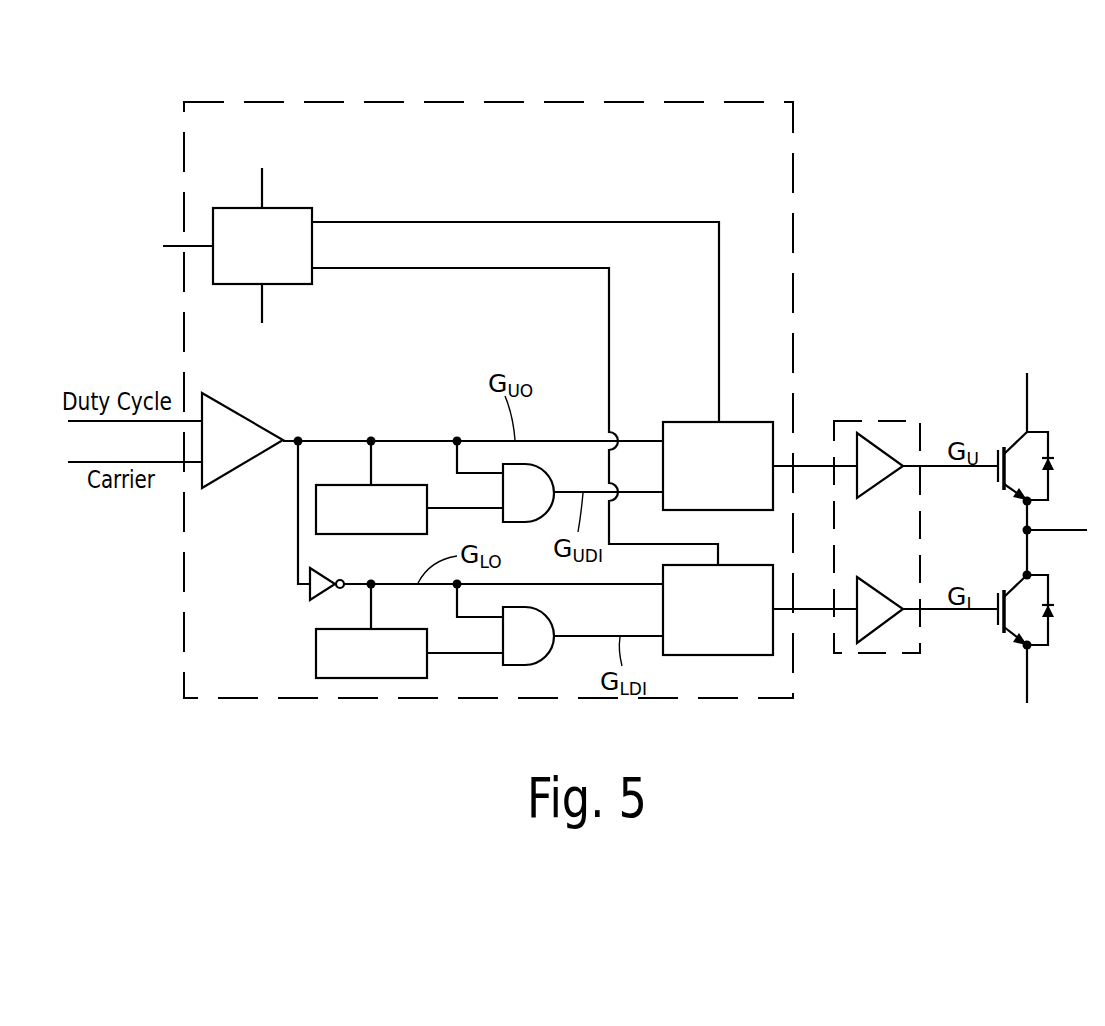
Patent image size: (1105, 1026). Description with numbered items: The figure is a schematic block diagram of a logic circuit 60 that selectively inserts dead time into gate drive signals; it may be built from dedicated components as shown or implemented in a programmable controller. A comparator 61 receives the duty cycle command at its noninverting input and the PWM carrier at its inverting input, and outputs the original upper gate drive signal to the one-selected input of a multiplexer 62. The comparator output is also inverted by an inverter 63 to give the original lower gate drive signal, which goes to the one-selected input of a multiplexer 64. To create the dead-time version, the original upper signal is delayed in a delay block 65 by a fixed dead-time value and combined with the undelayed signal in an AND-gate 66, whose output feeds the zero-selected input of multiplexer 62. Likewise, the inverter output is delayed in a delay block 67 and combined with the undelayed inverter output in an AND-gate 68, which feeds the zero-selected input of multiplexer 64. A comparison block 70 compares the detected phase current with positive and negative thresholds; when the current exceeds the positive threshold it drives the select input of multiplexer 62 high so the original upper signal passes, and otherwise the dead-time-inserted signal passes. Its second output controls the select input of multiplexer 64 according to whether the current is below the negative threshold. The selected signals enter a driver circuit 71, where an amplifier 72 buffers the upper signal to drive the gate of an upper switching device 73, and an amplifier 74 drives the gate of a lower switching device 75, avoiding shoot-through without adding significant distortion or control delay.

The logic circuit 60 is at (706, 101).
The comparator 61 is at (255, 459).
The multiplexer 62 is at (697, 422).
The inverter 63 is at (310, 595).
The multiplexer 64 is at (742, 655).
The delay block 65 is at (393, 485).
The AND-gate 66 is at (549, 476).
The delay block 67 is at (316, 653).
The AND-gate 68 is at (523, 665).
The comparison block 70 is at (227, 207).
The driver circuit 71 is at (862, 421).
The amplifier 72 is at (886, 448).
The upper switching device 73 is at (998, 486).
The amplifier 74 is at (885, 630).
The lower switching device 75 is at (1000, 633).